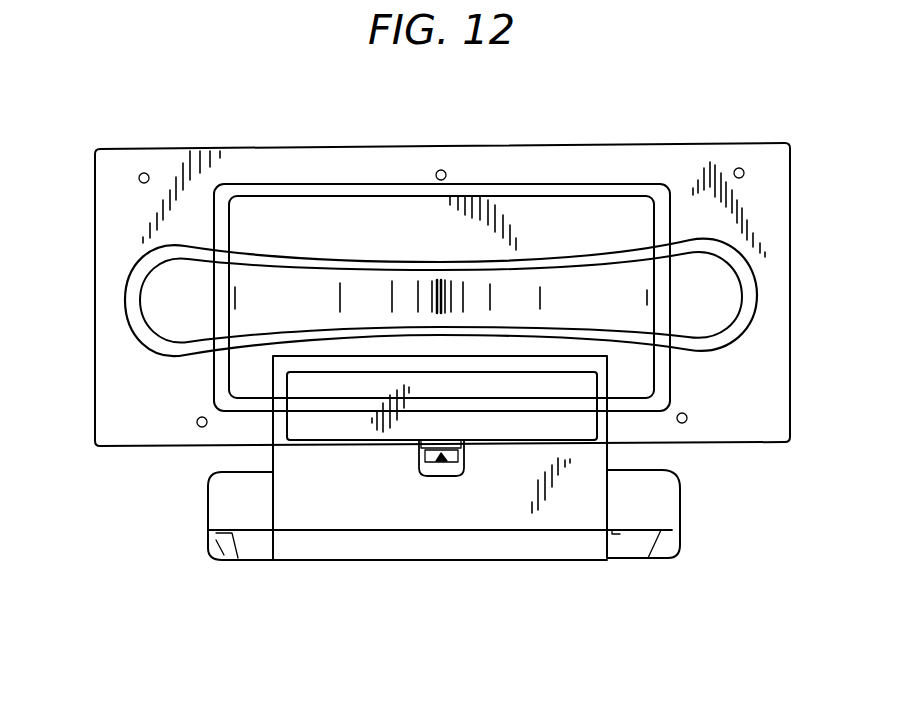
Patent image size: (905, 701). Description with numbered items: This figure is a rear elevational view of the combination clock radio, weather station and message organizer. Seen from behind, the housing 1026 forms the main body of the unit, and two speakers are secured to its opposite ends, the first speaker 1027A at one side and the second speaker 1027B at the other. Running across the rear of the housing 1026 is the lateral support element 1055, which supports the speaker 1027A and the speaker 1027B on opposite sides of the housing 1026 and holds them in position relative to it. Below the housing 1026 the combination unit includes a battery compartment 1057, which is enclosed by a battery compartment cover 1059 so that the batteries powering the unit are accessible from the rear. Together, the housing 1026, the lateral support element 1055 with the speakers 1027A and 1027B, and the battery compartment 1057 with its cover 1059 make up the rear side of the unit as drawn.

The speaker 1027B is at (240, 153).
The speaker 1027A is at (688, 153).
The housing 1026 is at (535, 153).
The lateral support element 1055 is at (175, 296).
The battery compartment 1057 is at (344, 440).
The battery compartment cover 1059 is at (313, 425).